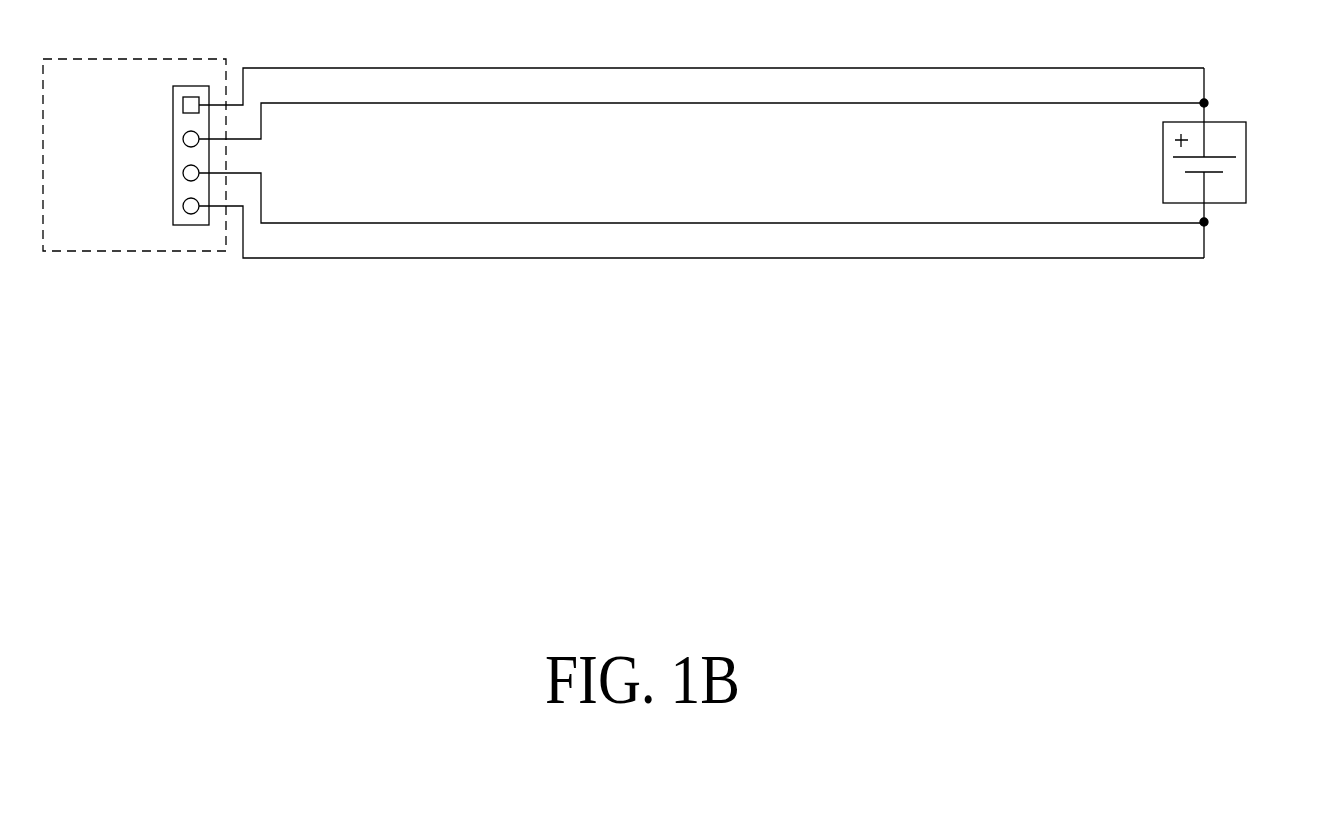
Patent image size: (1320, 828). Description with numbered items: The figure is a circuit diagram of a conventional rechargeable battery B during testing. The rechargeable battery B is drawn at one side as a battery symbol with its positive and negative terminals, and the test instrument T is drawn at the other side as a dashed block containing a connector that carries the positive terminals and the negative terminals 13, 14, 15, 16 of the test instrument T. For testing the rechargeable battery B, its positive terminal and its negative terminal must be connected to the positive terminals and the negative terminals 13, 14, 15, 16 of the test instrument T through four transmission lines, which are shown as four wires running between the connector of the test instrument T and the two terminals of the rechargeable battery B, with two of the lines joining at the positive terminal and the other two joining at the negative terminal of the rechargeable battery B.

The test instrument T is at (161, 251).
The positive terminal of the test instrument 13 is at (183, 103).
The positive terminal of the test instrument 14 is at (183, 139).
The negative terminal of the test instrument 15 is at (183, 175).
The negative terminal of the test instrument 16 is at (185, 211).
The rechargeable battery B is at (1227, 122).